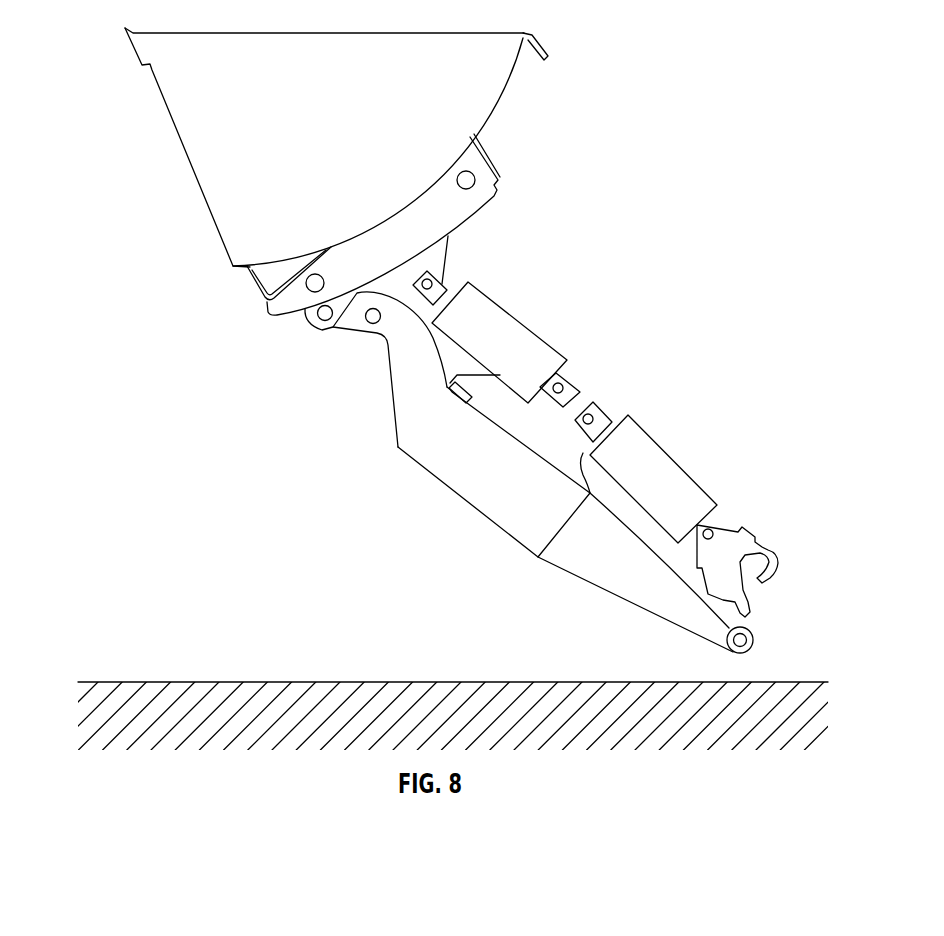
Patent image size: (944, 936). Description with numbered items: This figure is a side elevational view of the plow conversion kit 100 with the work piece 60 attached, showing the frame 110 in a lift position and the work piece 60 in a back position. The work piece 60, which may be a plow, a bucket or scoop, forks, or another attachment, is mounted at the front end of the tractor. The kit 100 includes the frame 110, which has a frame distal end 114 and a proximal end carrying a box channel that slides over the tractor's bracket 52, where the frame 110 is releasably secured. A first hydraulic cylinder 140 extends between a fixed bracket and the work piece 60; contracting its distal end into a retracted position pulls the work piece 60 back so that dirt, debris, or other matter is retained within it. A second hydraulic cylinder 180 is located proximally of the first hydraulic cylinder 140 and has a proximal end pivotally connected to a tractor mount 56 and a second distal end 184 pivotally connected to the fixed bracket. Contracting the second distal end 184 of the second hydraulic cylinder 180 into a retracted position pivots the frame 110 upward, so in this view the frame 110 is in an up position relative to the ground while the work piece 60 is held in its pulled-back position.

The work piece 60 is at (497, 98).
The plow conversion kit 100 is at (390, 396).
The frame distal end 114 is at (442, 286).
The first hydraulic cylinder 140 is at (518, 318).
The second distal end 184 is at (603, 417).
The second hydraulic cylinder 180 is at (669, 454).
The frame 110 is at (468, 503).
The bracket 52 is at (630, 601).
The tractor mount 56 is at (750, 532).